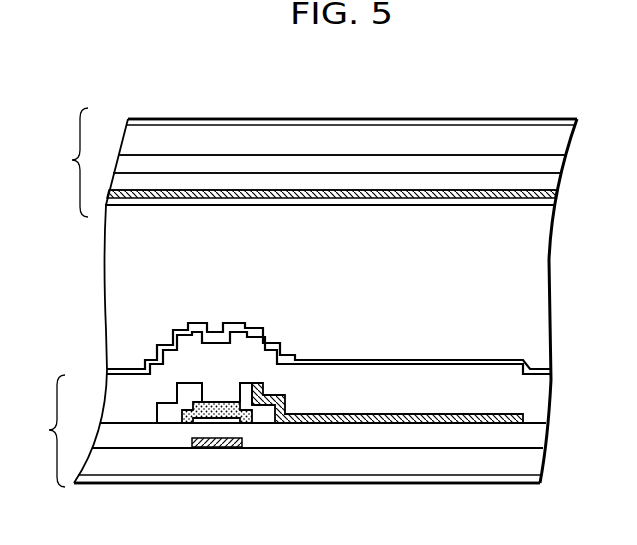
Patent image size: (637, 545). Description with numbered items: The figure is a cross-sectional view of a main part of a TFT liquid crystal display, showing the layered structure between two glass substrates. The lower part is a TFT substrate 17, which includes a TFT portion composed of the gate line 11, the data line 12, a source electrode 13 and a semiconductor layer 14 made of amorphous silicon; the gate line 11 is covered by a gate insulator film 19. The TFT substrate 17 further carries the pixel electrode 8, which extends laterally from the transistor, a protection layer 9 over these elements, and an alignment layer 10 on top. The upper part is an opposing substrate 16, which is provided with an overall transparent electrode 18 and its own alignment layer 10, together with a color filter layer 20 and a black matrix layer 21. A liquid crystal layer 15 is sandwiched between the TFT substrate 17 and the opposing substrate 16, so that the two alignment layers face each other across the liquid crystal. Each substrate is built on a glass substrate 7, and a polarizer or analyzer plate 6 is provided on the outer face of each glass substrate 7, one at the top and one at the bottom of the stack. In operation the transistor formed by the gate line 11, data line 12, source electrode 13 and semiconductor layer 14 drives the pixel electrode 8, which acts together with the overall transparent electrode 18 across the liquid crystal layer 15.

The polarizer or analyzer plate 6 is at (175, 118).
The glass substrate 7 is at (338, 140).
The pixel electrode 8 is at (428, 414).
The protection layer 9 is at (398, 385).
The alignment layer 10 is at (465, 205).
The gate line 11 is at (216, 448).
The data line 12 is at (176, 392).
The source electrode 13 is at (246, 392).
The semiconductor layer 14 is at (214, 402).
The liquid crystal layer 15 is at (125, 292).
The opposing substrate 16 is at (288, 162).
The TFT substrate 17 is at (283, 431).
The overall transparent electrode 18 is at (382, 195).
The gate insulator film 19 is at (535, 436).
The color filter layer 20 is at (550, 180).
The black matrix layer 21 is at (553, 160).